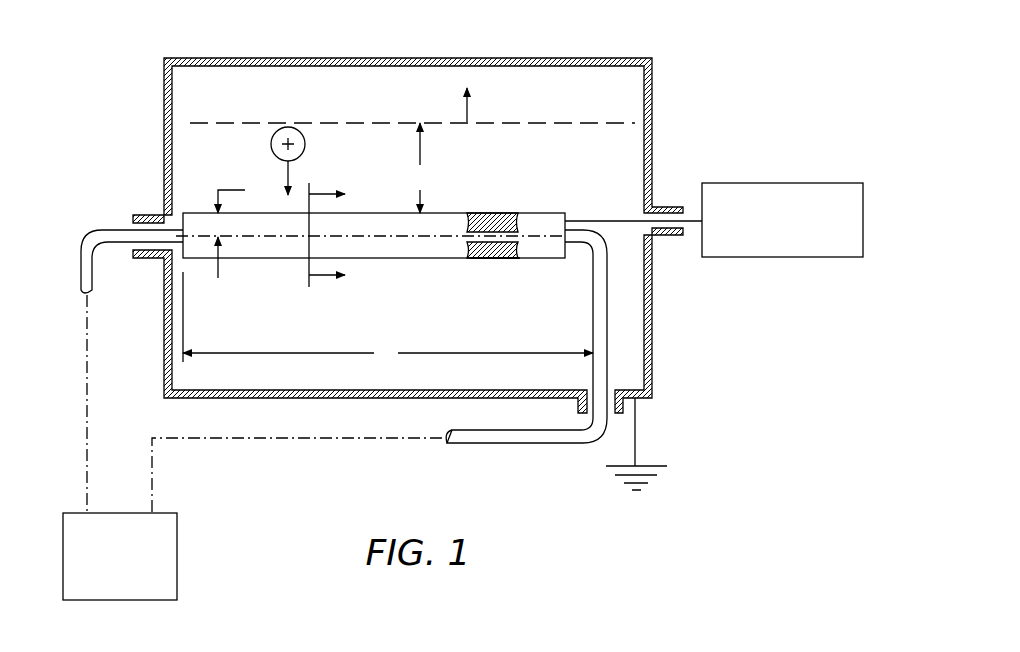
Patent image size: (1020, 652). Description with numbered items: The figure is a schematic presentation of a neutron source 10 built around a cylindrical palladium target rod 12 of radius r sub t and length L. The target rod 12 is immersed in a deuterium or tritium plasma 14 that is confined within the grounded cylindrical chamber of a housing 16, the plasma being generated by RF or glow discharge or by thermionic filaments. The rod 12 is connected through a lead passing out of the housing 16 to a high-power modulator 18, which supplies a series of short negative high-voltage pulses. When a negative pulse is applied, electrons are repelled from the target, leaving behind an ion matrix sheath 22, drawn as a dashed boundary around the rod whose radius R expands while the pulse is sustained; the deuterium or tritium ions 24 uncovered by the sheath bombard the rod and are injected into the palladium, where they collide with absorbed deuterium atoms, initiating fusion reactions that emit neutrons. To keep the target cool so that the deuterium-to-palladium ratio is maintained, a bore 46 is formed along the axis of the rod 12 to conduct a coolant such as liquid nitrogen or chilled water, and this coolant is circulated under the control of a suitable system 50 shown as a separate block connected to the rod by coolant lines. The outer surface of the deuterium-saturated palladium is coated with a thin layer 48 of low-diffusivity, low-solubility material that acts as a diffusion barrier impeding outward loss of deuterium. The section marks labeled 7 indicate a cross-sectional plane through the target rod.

The neutron source 10 is at (718, 72).
The cylindrical palladium target rod 12 is at (397, 244).
The deuterium or tritium plasma 14 is at (396, 310).
The housing 16 is at (313, 398).
The high-power modulator 18 is at (797, 183).
The ion matrix sheath 22 is at (549, 121).
The deuterium or tritium ions 24 is at (306, 144).
The bore 46 is at (500, 245).
The thin layer 48 is at (488, 262).
The coolant circulation system 50 is at (110, 566).
The section line 7- 7 is at (334, 235).